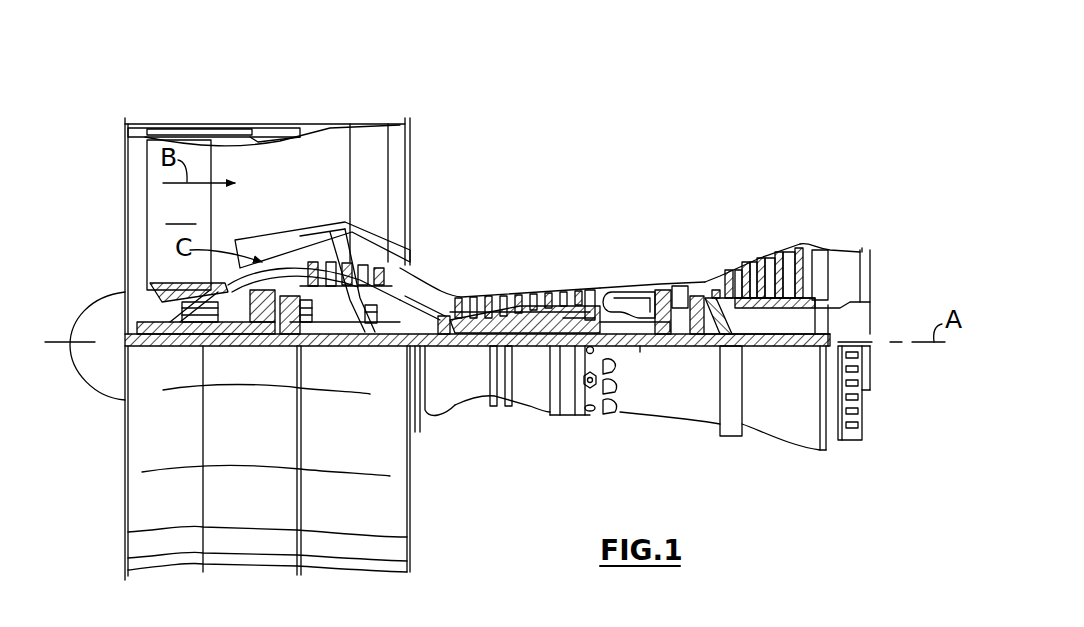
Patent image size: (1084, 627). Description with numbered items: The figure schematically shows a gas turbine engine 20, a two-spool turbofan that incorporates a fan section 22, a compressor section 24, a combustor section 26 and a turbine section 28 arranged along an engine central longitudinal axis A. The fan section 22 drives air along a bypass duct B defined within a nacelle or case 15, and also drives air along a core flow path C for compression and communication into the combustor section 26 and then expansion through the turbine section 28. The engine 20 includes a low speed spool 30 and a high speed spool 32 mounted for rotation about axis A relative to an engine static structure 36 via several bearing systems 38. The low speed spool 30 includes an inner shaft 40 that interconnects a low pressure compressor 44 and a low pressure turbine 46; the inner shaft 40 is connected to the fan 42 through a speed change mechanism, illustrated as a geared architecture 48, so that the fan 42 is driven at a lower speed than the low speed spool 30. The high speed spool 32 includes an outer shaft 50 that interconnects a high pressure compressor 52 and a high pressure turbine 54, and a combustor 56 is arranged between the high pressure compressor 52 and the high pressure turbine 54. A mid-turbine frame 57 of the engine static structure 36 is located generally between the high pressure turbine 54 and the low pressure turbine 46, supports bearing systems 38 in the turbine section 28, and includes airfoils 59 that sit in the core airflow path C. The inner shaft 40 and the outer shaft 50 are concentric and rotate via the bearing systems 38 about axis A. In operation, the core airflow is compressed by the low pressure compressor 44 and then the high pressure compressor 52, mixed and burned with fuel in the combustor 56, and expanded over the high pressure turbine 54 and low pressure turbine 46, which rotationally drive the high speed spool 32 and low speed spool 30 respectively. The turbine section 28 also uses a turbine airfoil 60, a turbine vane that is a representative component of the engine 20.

The nacelle or case 15 is at (268, 124).
The gas turbine engine 20 is at (630, 158).
The fan section 22 is at (210, 118).
The compressor section 24 is at (452, 262).
The combustor section 26 is at (616, 262).
The turbine section 28 is at (744, 236).
The low speed spool 30 is at (530, 352).
The high speed spool 32 is at (566, 300).
The engine static structure 36 is at (566, 410).
The bearing systems 38 is at (374, 346).
The inner shaft 40 is at (428, 372).
The fan 42 is at (140, 270).
The low pressure compressor 44 is at (355, 288).
The low pressure turbine 46 is at (772, 258).
The geared architecture 48 is at (270, 346).
The outer shaft 50 is at (626, 347).
The high pressure compressor 52 is at (514, 296).
The high pressure turbine 54 is at (666, 290).
The combustor 56 is at (625, 292).
The mid-turbine frame 57 is at (710, 272).
The airfoils 59 is at (732, 322).
The turbine airfoil 60 is at (706, 292).